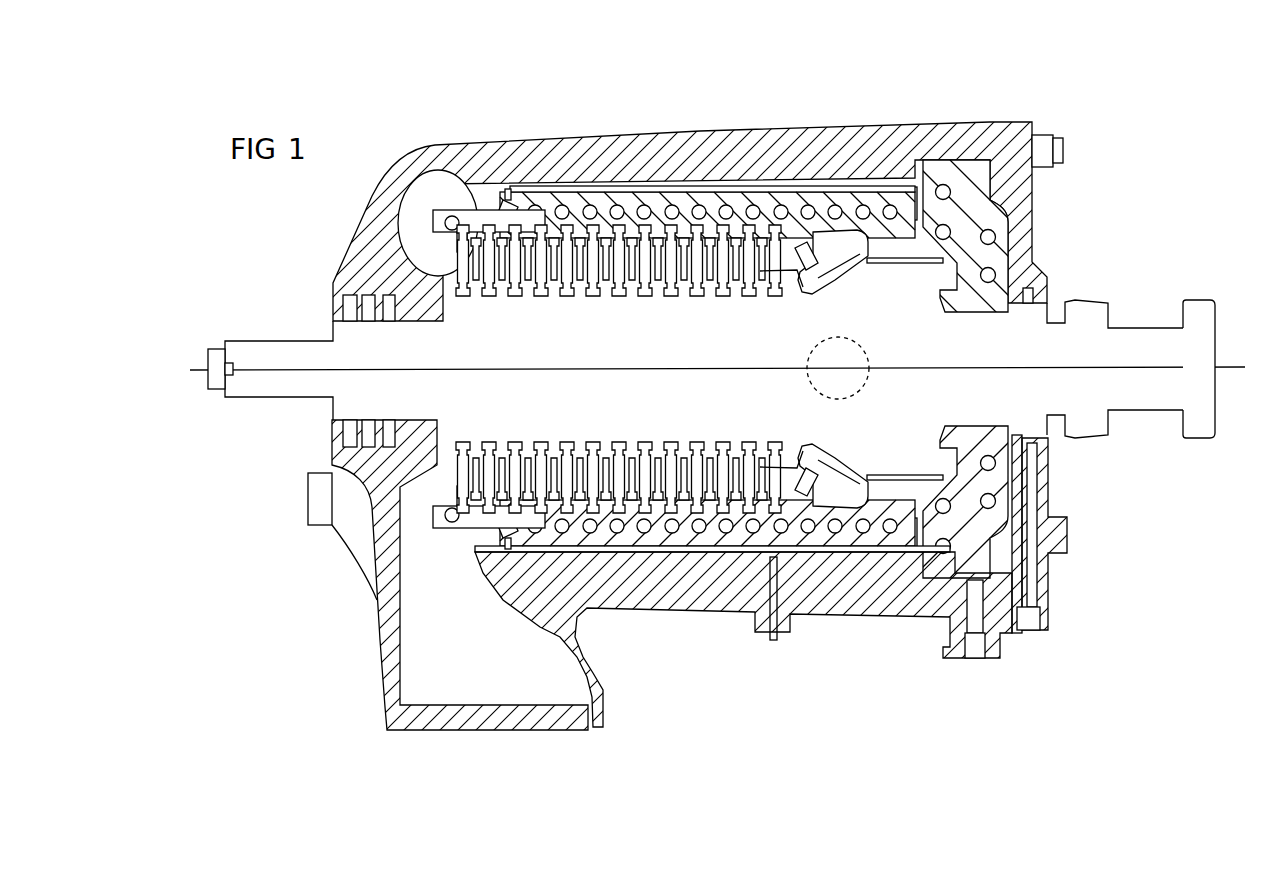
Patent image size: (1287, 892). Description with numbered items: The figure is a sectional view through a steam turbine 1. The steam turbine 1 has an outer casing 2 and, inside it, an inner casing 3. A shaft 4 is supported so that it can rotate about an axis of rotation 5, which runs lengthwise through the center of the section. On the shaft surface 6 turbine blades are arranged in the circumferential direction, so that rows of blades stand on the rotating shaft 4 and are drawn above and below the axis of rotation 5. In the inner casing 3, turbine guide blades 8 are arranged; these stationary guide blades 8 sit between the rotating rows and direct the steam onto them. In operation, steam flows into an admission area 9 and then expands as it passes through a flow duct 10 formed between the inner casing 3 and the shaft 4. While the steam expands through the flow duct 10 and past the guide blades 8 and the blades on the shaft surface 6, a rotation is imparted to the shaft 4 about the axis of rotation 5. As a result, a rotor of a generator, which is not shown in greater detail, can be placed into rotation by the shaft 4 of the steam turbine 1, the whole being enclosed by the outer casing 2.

The steam turbine 1 is at (1155, 161).
The outer casing 2 is at (933, 135).
The inner casing 3 is at (890, 545).
The shaft 4 is at (1202, 305).
The axis of rotation 5 is at (1236, 357).
The shaft surface 6 is at (440, 465).
The turbine guide blades 8 is at (480, 257).
The admission area 9 is at (838, 240).
The flow duct 10 is at (793, 490).